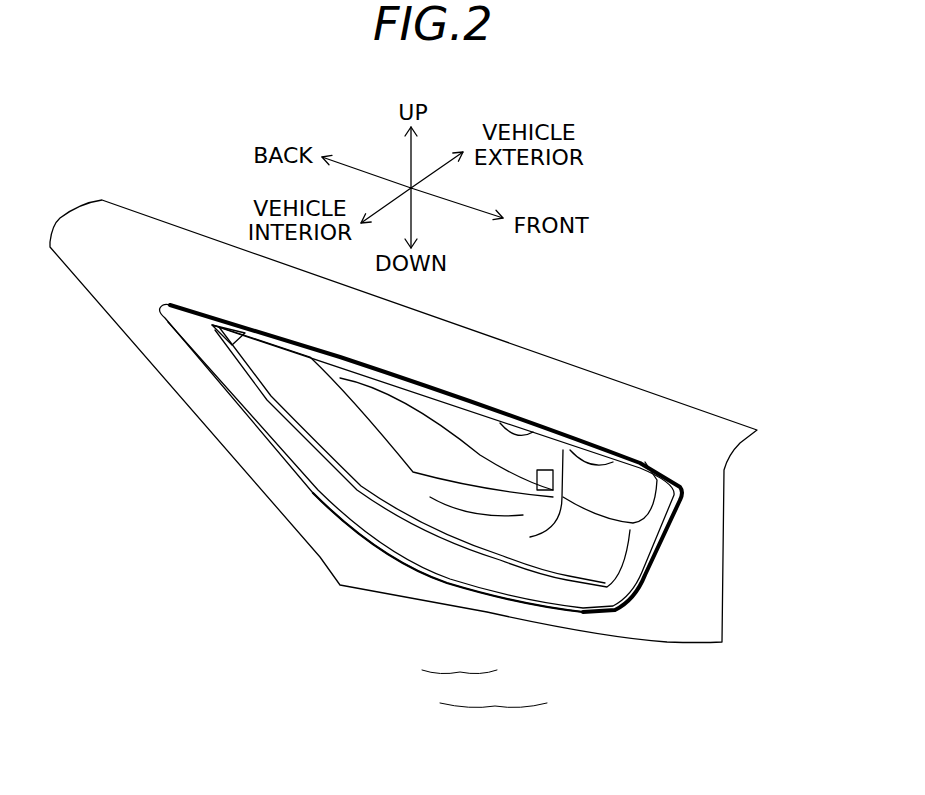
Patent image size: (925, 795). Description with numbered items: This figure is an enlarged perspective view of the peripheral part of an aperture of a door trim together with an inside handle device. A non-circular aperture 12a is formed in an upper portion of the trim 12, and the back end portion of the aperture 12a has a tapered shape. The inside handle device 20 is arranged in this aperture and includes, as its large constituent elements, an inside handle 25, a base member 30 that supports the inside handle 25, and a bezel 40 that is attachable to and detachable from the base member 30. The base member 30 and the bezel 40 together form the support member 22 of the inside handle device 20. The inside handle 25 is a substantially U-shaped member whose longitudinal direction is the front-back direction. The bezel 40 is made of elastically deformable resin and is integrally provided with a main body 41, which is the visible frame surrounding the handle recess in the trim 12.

The trim 12 is at (713, 628).
The aperture 12a is at (626, 462).
The inside handle device 20 is at (435, 530).
The support member 22 is at (421, 514).
The inside handle 25 is at (565, 568).
The base member 30 is at (438, 468).
The bezel 40 is at (479, 568).
The main body 41 is at (602, 600).